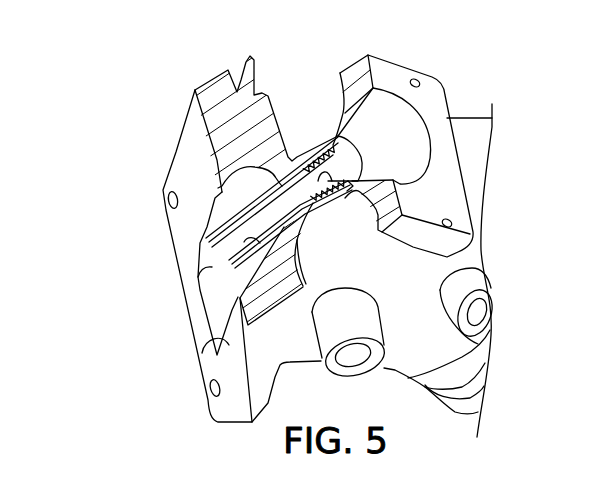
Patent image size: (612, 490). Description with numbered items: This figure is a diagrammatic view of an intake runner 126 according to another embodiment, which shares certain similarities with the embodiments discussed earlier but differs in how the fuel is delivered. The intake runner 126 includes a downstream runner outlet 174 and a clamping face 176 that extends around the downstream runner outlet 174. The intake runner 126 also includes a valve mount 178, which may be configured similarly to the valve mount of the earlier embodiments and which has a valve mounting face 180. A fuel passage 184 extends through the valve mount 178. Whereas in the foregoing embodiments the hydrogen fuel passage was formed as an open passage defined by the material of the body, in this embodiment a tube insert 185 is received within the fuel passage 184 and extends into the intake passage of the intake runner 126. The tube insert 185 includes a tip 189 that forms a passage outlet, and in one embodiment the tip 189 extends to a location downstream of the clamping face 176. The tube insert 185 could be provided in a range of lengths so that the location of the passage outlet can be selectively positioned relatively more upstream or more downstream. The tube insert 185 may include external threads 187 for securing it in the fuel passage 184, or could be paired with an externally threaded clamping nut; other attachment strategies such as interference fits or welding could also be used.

The intake runner 126 is at (121, 204).
The downstream runner outlet 174 is at (200, 360).
The clamping face 176 is at (183, 232).
The valve mount 178 is at (341, 71).
The valve mounting face 180 is at (437, 83).
The fuel passage 184 is at (294, 170).
The tube insert 185 is at (240, 273).
The external threads 187 is at (338, 134).
The tip 189 is at (188, 293).